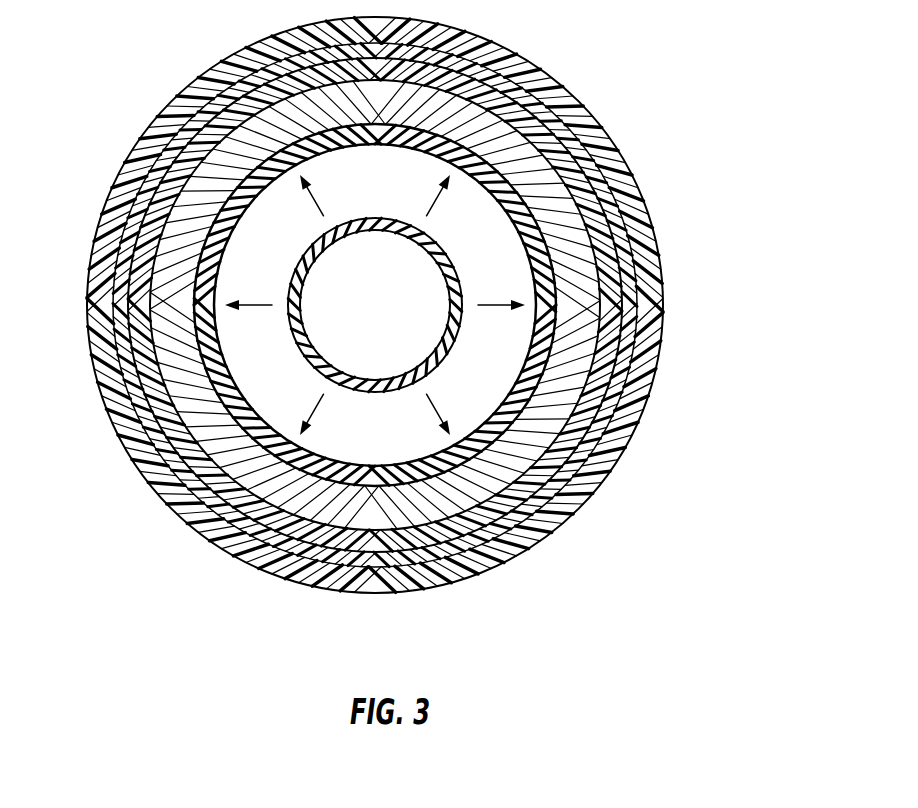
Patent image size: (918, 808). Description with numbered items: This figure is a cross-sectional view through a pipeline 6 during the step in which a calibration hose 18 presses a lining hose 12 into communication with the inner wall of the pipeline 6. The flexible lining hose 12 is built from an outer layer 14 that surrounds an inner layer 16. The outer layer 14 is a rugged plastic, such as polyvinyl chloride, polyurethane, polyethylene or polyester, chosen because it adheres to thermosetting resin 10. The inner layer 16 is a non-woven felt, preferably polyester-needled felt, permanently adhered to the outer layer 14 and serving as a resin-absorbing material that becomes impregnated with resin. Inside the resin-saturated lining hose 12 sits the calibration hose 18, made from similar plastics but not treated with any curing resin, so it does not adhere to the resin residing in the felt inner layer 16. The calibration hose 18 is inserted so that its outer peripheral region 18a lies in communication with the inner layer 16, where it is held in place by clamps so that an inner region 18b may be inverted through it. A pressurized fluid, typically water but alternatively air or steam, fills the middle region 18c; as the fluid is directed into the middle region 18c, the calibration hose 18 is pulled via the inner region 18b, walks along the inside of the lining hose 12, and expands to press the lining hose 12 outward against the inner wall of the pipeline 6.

The pipeline 6 is at (597, 468).
The thermosetting resin 10 is at (410, 340).
The lining hose 12 is at (562, 99).
The outer layer 14 is at (607, 260).
The inner layer 16 is at (560, 367).
The calibration hose 18 is at (335, 404).
The outer peripheral region 18a is at (460, 453).
The inner region 18b is at (345, 373).
The middle region 18c is at (277, 390).